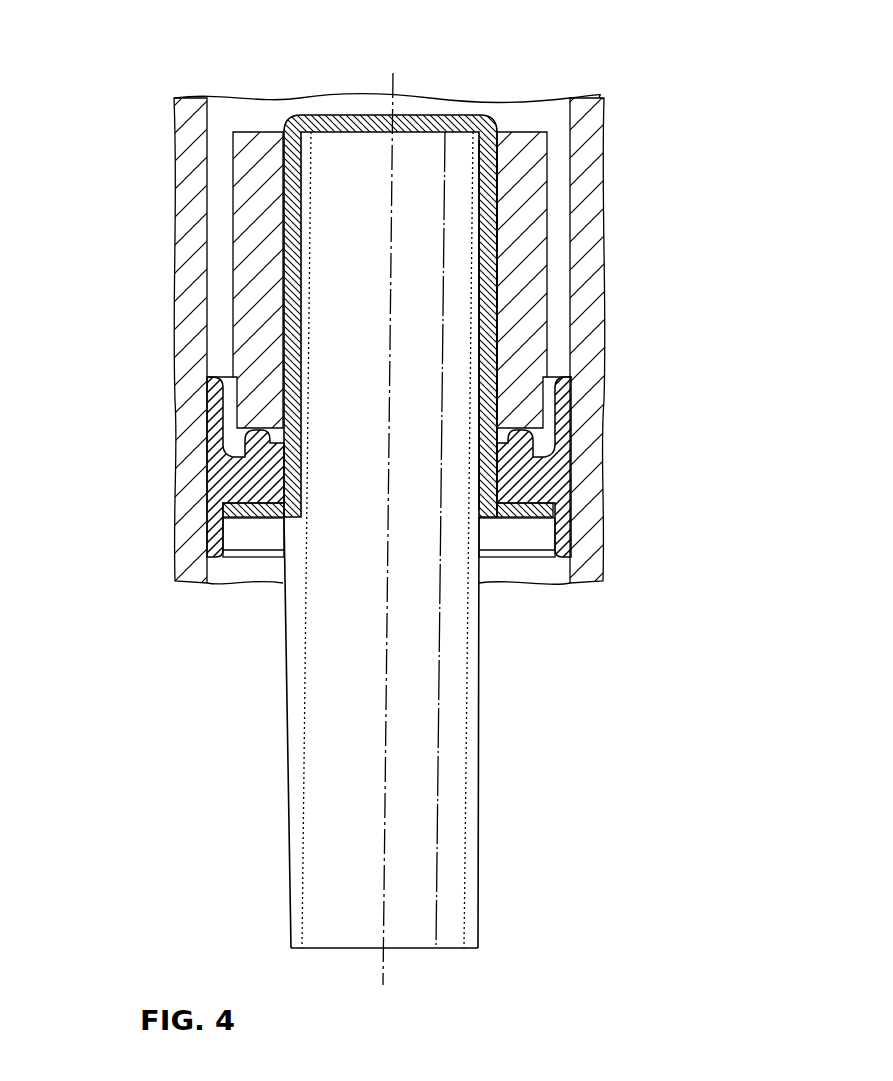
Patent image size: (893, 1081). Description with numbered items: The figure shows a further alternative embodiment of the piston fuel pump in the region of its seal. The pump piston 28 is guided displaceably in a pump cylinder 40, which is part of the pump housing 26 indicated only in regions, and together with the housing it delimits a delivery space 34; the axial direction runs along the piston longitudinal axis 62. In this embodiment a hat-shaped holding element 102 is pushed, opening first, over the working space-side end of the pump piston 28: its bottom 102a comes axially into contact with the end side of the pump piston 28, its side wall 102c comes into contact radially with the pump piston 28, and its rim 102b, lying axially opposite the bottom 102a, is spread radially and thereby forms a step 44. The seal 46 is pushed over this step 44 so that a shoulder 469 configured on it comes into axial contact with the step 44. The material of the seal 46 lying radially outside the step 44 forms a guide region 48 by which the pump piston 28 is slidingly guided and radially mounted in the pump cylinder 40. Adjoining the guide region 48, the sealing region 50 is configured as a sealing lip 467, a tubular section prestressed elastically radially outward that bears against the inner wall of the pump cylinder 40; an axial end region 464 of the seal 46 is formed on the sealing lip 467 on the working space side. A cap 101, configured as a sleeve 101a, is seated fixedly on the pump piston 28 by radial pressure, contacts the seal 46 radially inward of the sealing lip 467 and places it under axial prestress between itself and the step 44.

The holding element 102 is at (446, 325).
The bottom of holding element 102a is at (447, 115).
The rim of holding element 102b is at (376, 568).
The side wall of holding element 102c is at (498, 312).
The delivery space 34 is at (382, 65).
The cap 101 is at (472, 280).
The sleeve 101a is at (523, 188).
The pump cylinder 40 is at (205, 262).
The pump housing 26 is at (587, 275).
The sealing lip 467 is at (174, 467).
The sealing region 50 is at (197, 467).
The shoulder 469 is at (237, 480).
The axial end region 464 is at (587, 467).
The seal 46 is at (542, 477).
The guide region 48 is at (563, 535).
The step 44 is at (258, 520).
The pump piston 28 is at (455, 828).
The piston longitudinal axis 62 is at (385, 967).